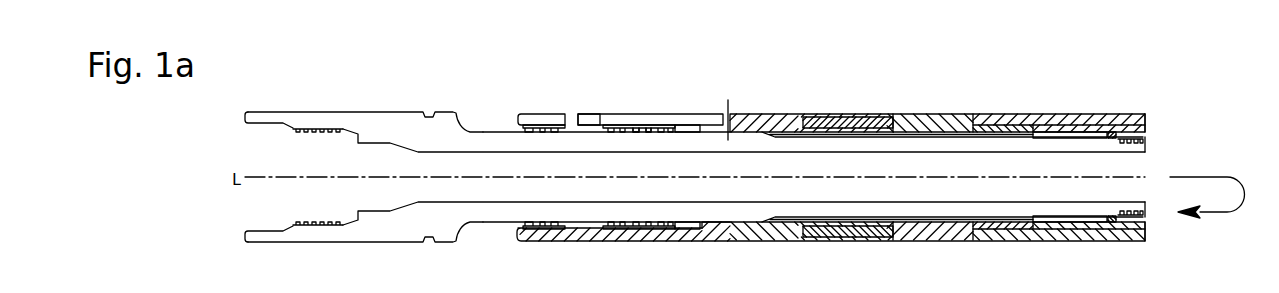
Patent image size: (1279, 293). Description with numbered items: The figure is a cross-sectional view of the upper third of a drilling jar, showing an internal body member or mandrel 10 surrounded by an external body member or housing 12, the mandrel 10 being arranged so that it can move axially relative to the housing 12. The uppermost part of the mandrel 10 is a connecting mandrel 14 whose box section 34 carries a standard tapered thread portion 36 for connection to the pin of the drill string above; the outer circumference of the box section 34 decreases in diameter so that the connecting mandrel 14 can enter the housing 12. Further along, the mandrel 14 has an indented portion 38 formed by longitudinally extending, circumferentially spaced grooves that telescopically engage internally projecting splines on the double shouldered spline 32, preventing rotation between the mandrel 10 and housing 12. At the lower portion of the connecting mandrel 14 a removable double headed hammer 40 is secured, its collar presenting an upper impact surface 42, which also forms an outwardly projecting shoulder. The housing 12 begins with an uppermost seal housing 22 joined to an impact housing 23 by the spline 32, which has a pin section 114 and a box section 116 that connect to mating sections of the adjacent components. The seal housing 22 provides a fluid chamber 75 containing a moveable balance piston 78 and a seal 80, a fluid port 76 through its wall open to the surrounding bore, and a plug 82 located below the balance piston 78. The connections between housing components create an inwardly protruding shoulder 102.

The internal mandrel 10 is at (1152, 143).
The external housing 12 is at (1147, 102).
The connecting mandrel 14 is at (512, 138).
The seal housing 22 is at (703, 112).
The impact housing 23 is at (1082, 112).
The double shouldered spline 32 is at (917, 112).
The box section 34 is at (391, 112).
The tapered thread portion 36 is at (298, 133).
The indented portion 38 is at (793, 112).
The double headed hammer 40 is at (1145, 133).
The upper impact surface 42 is at (1115, 112).
The fluid chamber 75 is at (603, 124).
The fluid port 76 is at (573, 112).
The balance piston 78 is at (648, 122).
The seal 80 is at (552, 123).
The plug 82 is at (728, 103).
The inwardly protruding shoulder 102 is at (1025, 112).
The pin section 114 is at (975, 112).
The box section 116 is at (851, 112).